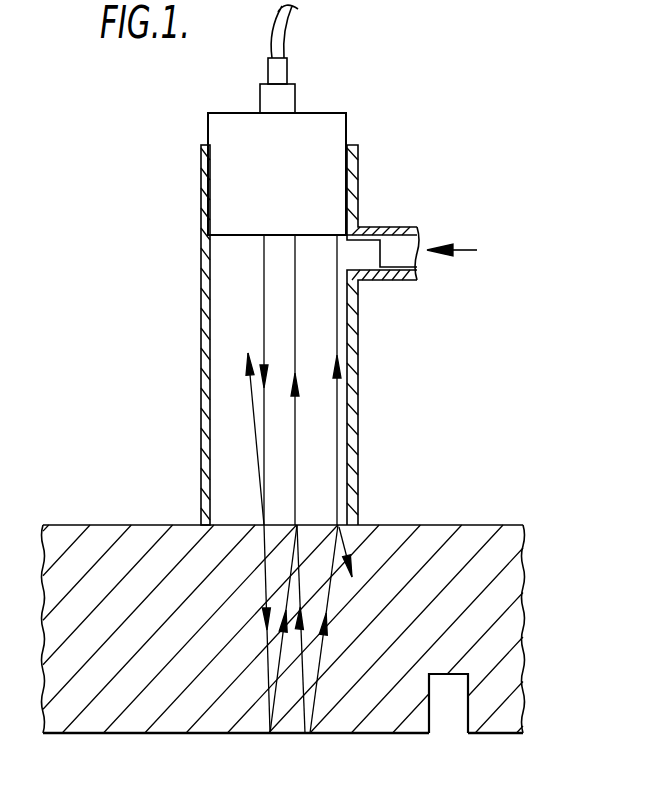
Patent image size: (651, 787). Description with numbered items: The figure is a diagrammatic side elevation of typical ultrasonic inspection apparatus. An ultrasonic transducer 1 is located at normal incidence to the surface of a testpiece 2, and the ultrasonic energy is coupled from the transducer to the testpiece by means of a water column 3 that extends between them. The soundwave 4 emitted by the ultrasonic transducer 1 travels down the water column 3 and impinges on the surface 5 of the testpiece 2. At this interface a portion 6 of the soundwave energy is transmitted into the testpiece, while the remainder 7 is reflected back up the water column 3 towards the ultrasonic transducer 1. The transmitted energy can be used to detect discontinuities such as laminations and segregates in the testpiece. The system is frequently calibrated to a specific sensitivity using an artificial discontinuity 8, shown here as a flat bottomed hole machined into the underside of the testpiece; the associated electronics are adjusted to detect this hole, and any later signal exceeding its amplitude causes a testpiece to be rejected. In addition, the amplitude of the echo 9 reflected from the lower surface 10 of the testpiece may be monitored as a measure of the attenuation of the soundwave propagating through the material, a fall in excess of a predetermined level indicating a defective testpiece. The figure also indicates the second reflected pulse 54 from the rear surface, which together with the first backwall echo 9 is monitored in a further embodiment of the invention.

The ultrasonic transducer 1 is at (327, 184).
The testpiece 2 is at (425, 555).
The water column 3 is at (327, 423).
The soundwave 4 is at (262, 276).
The surface of the testpiece 5 is at (73, 525).
The transmitted portion of soundwave energy 6 is at (268, 603).
The reflected remainder of soundwave 7 is at (255, 436).
The artificial discontinuity 8 is at (457, 707).
The echo 9 is at (332, 590).
The lower surface of the testpiece 10 is at (380, 734).
The second reflected pulse 54 is at (317, 660).